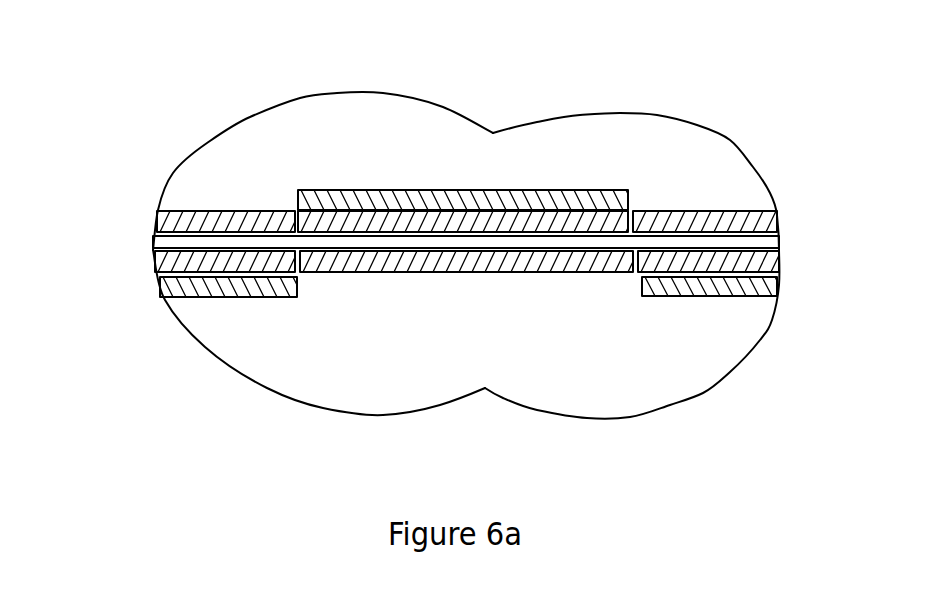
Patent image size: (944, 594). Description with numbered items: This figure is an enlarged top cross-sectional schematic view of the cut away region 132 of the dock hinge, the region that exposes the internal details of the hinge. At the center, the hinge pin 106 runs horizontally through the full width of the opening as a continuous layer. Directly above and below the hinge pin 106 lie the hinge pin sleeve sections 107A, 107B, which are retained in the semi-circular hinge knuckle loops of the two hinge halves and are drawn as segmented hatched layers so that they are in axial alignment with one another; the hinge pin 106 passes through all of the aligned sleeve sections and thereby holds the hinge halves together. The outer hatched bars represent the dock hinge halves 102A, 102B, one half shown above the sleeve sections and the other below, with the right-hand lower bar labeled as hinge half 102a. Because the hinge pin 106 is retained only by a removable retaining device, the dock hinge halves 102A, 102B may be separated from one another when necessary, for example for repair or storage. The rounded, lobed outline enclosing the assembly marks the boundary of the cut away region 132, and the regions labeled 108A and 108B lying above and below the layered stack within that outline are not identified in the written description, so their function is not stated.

The cut away region 132 is at (466, 252).
The upper body portion 108A is at (300, 148).
The lower body portion 108B is at (267, 333).
The dock hinge half 102B is at (463, 190).
The hinge pin sleeve section 107A is at (233, 210).
The hinge pin 106 is at (478, 243).
The hinge pin sleeve section 107B is at (395, 273).
The dock hinge half 102A is at (231, 298).
The dock hinge half 102a is at (693, 296).